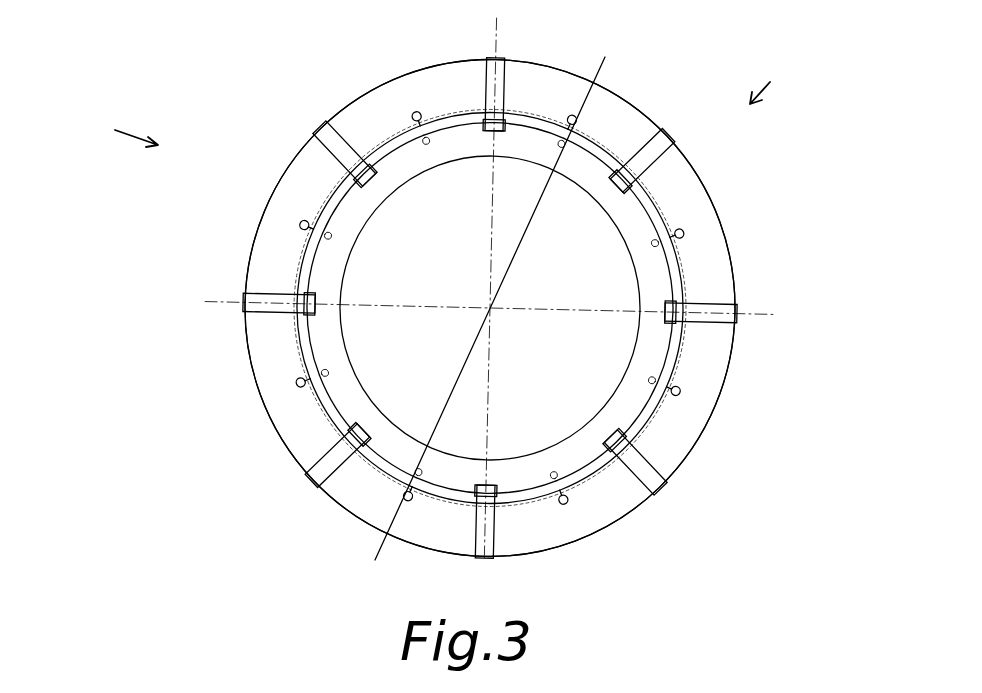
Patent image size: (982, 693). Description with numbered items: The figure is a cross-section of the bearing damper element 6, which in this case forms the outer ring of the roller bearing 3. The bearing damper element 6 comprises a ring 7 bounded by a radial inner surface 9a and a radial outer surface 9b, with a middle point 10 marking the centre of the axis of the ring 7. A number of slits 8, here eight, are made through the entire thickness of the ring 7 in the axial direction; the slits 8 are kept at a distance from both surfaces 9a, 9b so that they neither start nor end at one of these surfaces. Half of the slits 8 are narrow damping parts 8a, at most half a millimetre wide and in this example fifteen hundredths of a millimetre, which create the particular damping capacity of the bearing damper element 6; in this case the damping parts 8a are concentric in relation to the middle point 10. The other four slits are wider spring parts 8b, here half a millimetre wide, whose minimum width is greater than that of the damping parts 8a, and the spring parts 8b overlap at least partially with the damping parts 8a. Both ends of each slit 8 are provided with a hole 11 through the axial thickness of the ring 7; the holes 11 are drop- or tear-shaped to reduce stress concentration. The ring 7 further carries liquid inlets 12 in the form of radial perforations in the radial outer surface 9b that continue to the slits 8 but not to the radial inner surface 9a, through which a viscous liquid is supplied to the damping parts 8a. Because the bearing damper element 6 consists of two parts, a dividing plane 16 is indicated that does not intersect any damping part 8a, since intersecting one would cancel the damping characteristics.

The roller bearing 3 is at (764, 80).
The bearing damper element 6 is at (124, 125).
The ring 7 is at (258, 212).
The slits 8 is at (616, 132).
The damping parts 8a is at (543, 118).
The spring parts 8b is at (337, 182).
The radial inner surface 9a is at (350, 352).
The radial outer surface 9b is at (280, 170).
The middle point 10 is at (489, 306).
The holes 11 is at (410, 115).
The liquid inlet 12 is at (330, 122).
The dividing plane 16 is at (607, 64).